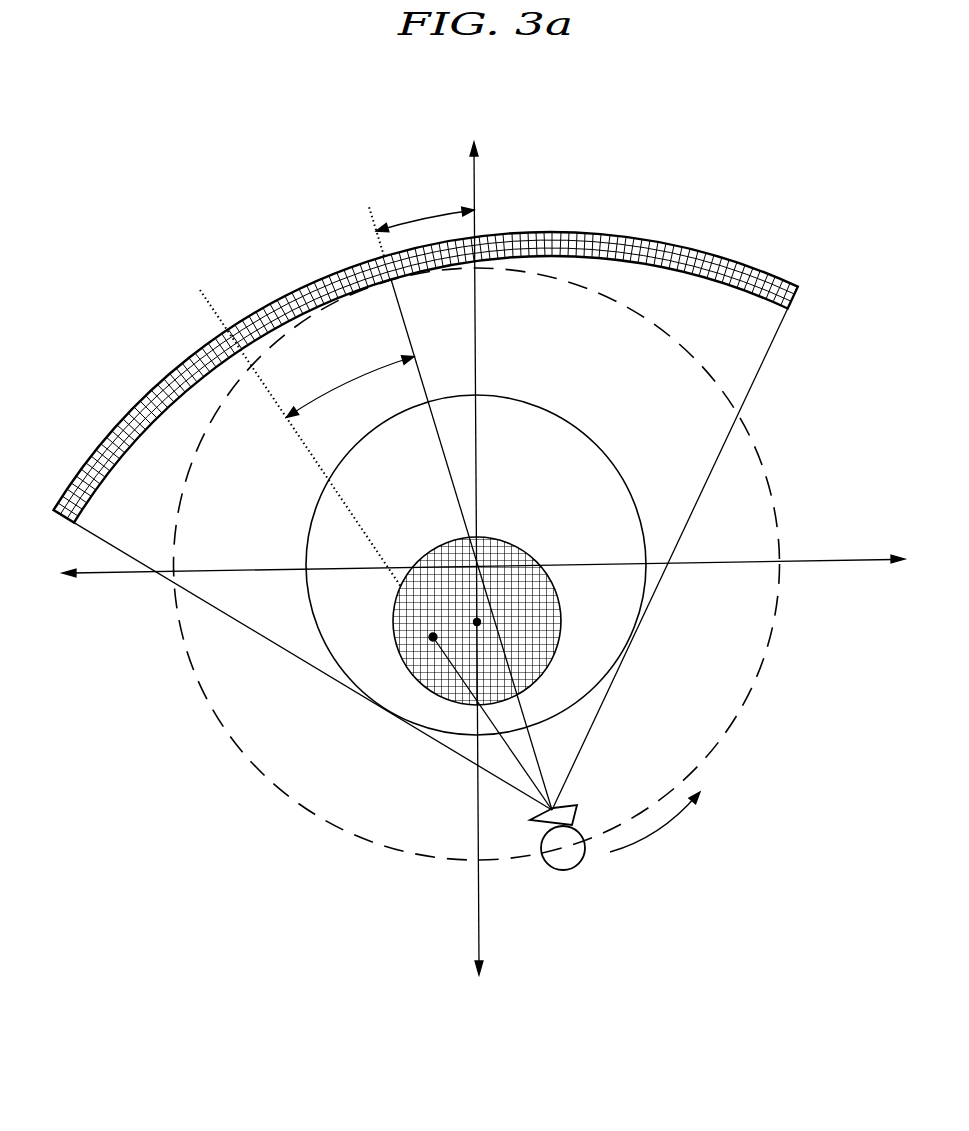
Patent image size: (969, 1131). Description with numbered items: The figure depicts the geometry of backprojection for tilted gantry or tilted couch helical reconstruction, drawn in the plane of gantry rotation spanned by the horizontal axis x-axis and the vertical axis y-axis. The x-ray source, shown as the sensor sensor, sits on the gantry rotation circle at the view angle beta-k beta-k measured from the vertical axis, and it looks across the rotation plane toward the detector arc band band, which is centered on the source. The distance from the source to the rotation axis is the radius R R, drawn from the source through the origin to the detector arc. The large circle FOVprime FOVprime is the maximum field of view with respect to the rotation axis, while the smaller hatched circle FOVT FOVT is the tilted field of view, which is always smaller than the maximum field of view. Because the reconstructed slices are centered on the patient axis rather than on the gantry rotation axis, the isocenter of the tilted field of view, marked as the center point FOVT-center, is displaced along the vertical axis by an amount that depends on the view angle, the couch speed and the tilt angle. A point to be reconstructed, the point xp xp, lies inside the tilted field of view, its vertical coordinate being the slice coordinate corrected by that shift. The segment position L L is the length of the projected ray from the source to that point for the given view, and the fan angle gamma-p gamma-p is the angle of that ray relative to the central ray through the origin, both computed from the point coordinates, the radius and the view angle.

The source-to-isocenter distance R is at (460, 508).
The maximum field of view FOV' FOVprime is at (597, 444).
The tilted field of view FOV_T FOVT is at (477, 622).
The FOV_T center FOVT-center is at (477, 622).
The x-ray source position sensor is at (568, 862).
The reconstruction point (x_p, y'_pk) xp is at (433, 637).
The segment position L(x_p, y'_pk, β_k) L is at (503, 740).
The fan angle γ_p gamma-p is at (350, 380).
The view angle β_k beta-k is at (425, 205).
The detector arc band is at (426, 377).
The x axis x-axis is at (483, 574).
The y' axis y-axis is at (491, 558).